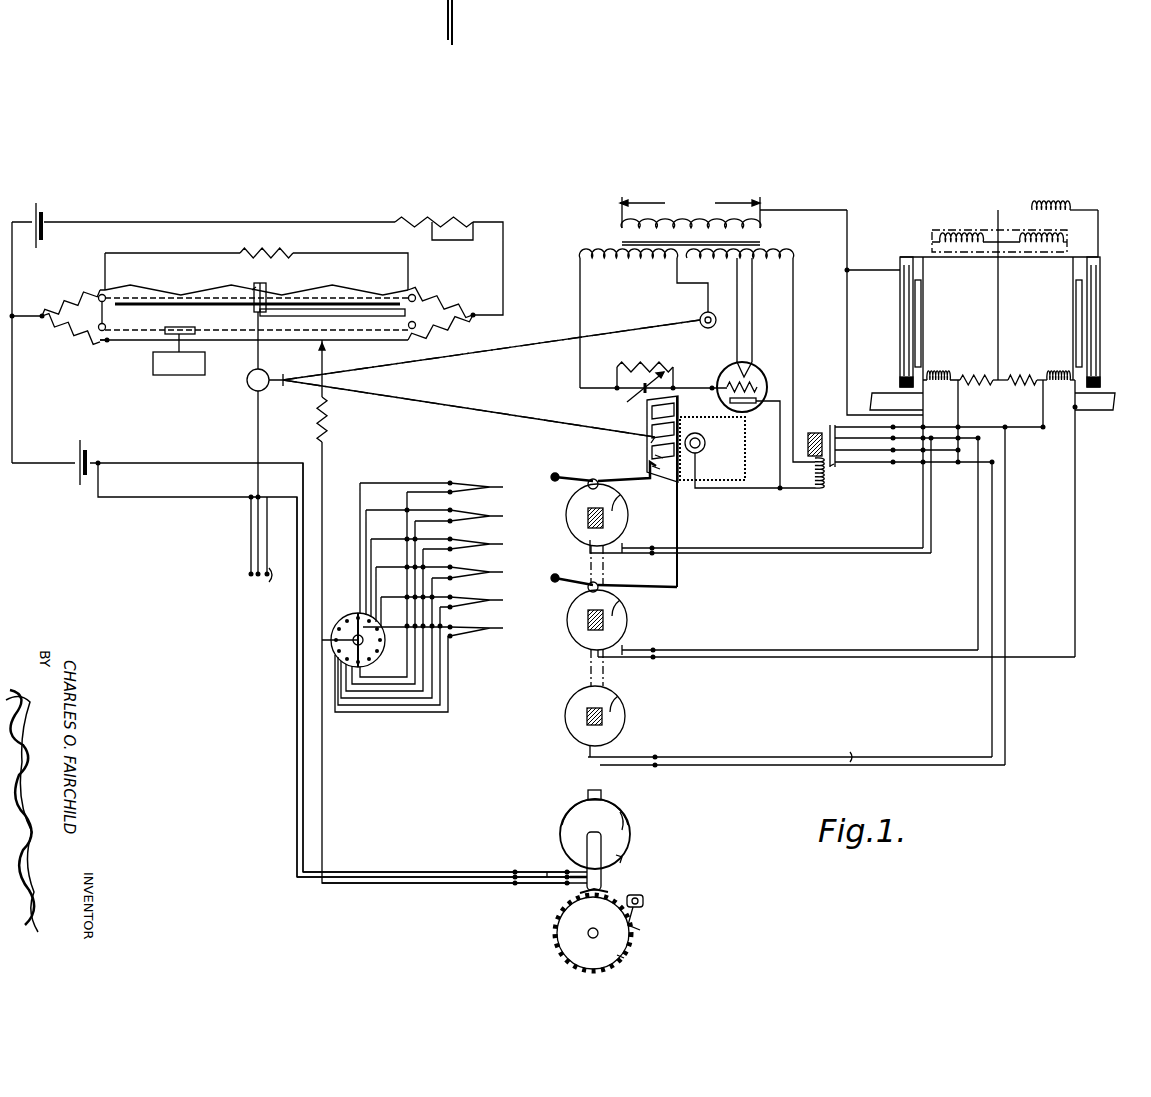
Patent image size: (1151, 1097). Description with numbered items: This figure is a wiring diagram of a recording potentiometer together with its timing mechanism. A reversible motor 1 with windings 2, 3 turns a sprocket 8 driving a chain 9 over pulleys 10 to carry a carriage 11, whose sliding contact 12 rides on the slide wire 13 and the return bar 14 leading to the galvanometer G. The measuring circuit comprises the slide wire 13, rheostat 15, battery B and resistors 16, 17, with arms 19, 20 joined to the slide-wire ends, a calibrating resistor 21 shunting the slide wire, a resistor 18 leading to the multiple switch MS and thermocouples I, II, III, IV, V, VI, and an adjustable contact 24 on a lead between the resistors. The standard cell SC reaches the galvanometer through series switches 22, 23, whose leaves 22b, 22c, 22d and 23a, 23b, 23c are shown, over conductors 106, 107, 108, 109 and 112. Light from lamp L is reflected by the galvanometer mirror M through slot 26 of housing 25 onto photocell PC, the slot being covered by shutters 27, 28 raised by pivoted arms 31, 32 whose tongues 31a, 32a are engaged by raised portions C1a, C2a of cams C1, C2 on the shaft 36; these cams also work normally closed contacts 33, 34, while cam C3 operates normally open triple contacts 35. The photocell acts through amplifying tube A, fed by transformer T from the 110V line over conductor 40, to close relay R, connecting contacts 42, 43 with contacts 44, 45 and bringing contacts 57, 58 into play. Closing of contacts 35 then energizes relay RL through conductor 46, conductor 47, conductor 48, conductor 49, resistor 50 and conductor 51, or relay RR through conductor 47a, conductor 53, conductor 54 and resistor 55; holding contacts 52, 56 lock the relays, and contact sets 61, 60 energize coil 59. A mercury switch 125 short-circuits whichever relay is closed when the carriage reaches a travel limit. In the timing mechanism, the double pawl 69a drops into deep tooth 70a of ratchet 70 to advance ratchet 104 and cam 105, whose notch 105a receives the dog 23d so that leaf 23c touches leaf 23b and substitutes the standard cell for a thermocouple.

The reversible motor 1 is at (178, 377).
The motor winding 2 is at (960, 235).
The motor winding 3 is at (1040, 236).
The sprocket 8 is at (178, 330).
The chain 9 is at (104, 311).
The pulleys 10 is at (104, 342).
The carriage 11 is at (255, 288).
The sliding contact 12 is at (264, 290).
The slide wire 13 is at (310, 289).
The return bar 14 is at (352, 303).
The variable rheostat 15 is at (422, 220).
The resistor 16 is at (72, 338).
The resistor 17 is at (446, 332).
The resistor 18 is at (326, 418).
The arm 19 is at (74, 300).
The arm 20 is at (441, 297).
The calibrating resistor 21 is at (280, 252).
The switch 22 is at (248, 538).
The switch leaf 22b is at (251, 560).
The switch leaf 22c is at (258, 560).
The contact 22d is at (267, 575).
The switch 23 is at (525, 885).
The switch leaf 23a is at (562, 886).
The switch leaf 23b is at (566, 852).
The center leaf 23c is at (548, 872).
The dog 23d is at (604, 880).
The adjustable contact 24 is at (328, 342).
The housing 25 is at (690, 482).
The slot 26 is at (670, 420).
The shutter 27 is at (648, 450).
The shutter 28 is at (645, 396).
The pivoted arm 31 is at (556, 474).
The tongue 31a is at (593, 477).
The pivoted arm 32 is at (568, 575).
The tongue 32a is at (604, 586).
The normally closed contacts 33 is at (664, 582).
The normally closed contacts 34 is at (640, 661).
The normally open triple contacts 35 is at (588, 760).
The shaft 36 is at (580, 720).
The wire 40 is at (847, 244).
The relay contact 42 is at (830, 430).
The relay contact 43 is at (834, 467).
The relay contact 44 is at (860, 439).
The relay contact 45 is at (857, 468).
The conductor 46 is at (836, 766).
The conductor 47 is at (808, 756).
The conductor 47a is at (852, 756).
The conductor 48 is at (799, 556).
The conductor 49 is at (791, 546).
The resistor 50 is at (984, 368).
The conductor 51 is at (997, 298).
The holding contacts 52 is at (920, 360).
The conductor 53 is at (809, 649).
The conductor 54 is at (815, 658).
The resistor 55 is at (1027, 369).
The holding contacts 56 is at (1078, 360).
The relay contact 57 is at (866, 463).
The relay contact 58 is at (847, 416).
The electromagnetic coil 59 is at (1030, 209).
The contact set 60 is at (1100, 360).
The contact set 61 is at (902, 364).
The double pawl 69a is at (645, 916).
The ratchet 70 is at (631, 940).
The deep tooth 70a is at (626, 958).
The ratchet 104 is at (612, 896).
The cam 105 is at (625, 845).
The notch 105a is at (622, 860).
The conductor 106 is at (256, 439).
The conductor 107 is at (297, 649).
The conductor 108 is at (297, 669).
The conductor 109 is at (297, 689).
The conductor 112 is at (192, 499).
The mercury switch 125 is at (873, 395).
The battery B is at (37, 228).
The standard cell SC is at (80, 453).
The galvanometer G is at (258, 380).
The mirror M is at (279, 392).
The transformer T is at (713, 329).
The supply 110V is at (690, 204).
The lamp L is at (708, 329).
The amplifying tube A is at (757, 368).
The photoelectric cell PC is at (712, 448).
The relay R is at (815, 472).
The multiple switch MS is at (350, 630).
The thermocouple I is at (437, 578).
The thermocouple II is at (435, 596).
The thermocouple III is at (434, 613).
The thermocouple IV is at (433, 631).
The thermocouple V is at (429, 648).
The thermocouple VI is at (428, 666).
The cam C1 is at (626, 514).
The raised portion C1a is at (626, 496).
The cam C2 is at (626, 610).
The raised portion C2a is at (626, 631).
The cam C3 is at (628, 711).
The relay RL is at (941, 368).
The relay RR is at (1060, 368).